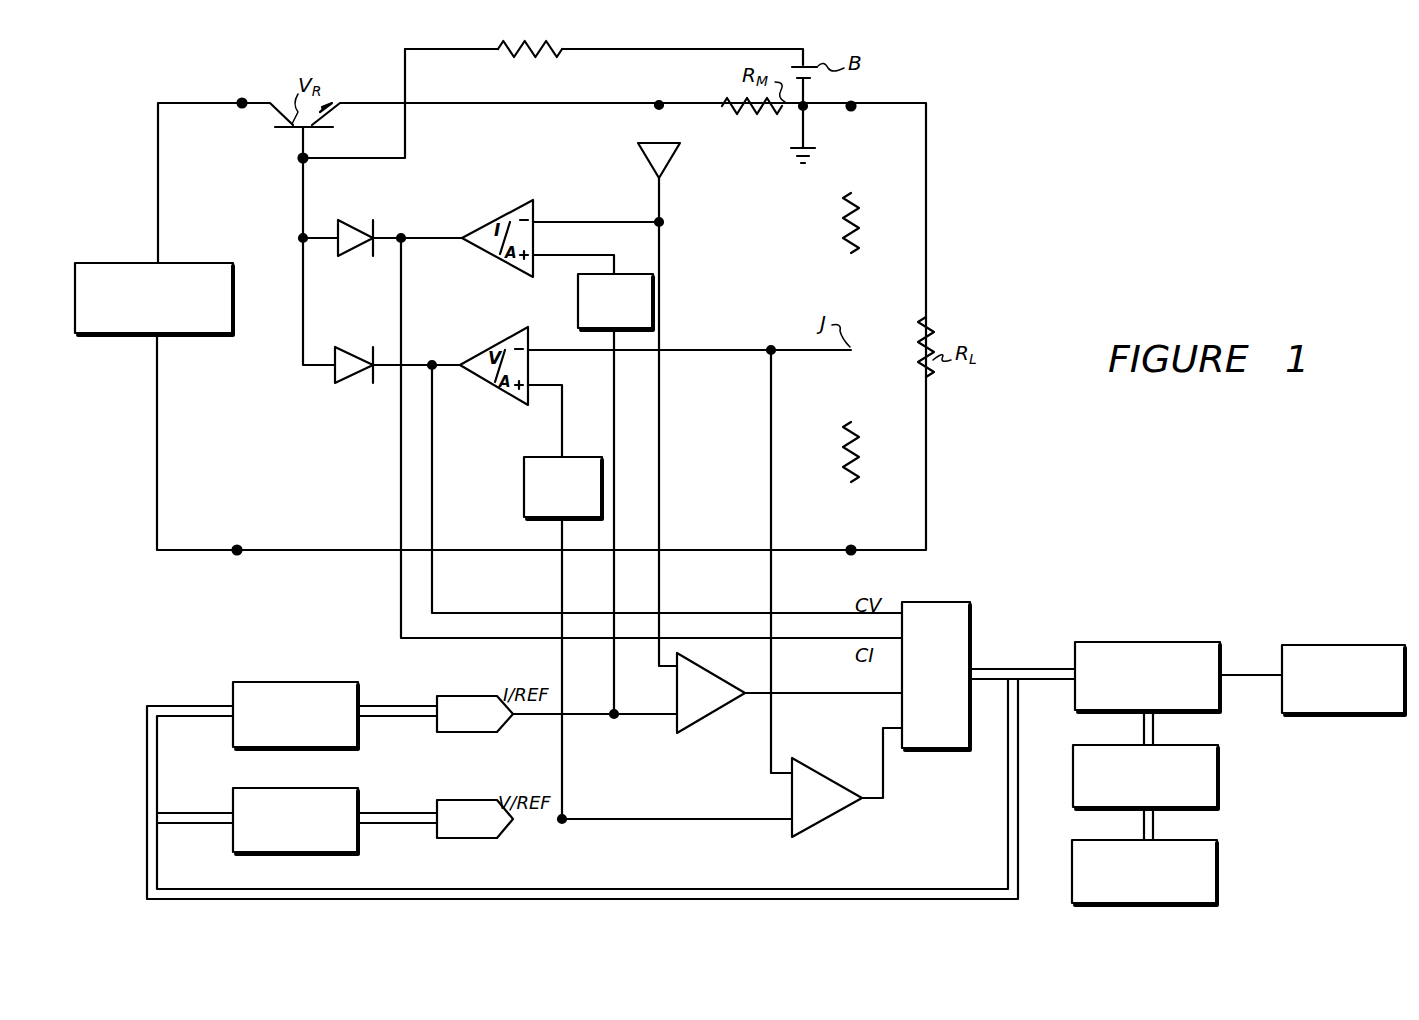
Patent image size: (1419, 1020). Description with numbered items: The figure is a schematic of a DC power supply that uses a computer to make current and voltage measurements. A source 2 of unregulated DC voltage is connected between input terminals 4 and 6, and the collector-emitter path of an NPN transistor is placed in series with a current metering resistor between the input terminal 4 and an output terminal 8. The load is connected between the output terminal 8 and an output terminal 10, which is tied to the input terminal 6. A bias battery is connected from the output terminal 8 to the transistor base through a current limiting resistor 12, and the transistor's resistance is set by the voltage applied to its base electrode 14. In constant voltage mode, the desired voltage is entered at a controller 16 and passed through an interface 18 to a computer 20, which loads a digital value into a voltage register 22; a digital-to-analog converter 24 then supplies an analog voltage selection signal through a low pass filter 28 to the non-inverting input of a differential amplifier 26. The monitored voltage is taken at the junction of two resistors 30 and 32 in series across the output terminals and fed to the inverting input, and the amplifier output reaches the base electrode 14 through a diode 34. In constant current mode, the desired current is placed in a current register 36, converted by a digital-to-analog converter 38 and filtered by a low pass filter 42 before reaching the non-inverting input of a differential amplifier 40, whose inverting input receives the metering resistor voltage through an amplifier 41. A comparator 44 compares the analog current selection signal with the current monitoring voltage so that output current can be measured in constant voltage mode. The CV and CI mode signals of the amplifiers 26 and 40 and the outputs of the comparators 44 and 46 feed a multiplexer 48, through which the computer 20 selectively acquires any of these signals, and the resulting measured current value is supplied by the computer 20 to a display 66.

The source of unregulated DC voltage 2 is at (207, 262).
The input terminal 4 is at (246, 98).
The input terminal 6 is at (240, 545).
The output terminal 8 is at (857, 104).
The output terminal 10 is at (846, 548).
The current limiting resistor 12 is at (528, 45).
The base electrode 14 is at (298, 158).
The controller 16 is at (1219, 888).
The interface 18 is at (1220, 794).
The computer 20 is at (1222, 703).
The voltage register 22 is at (320, 788).
The digital-to-analog converter 24 is at (470, 799).
The differential amplifier 26 is at (510, 326).
The low pass filter 28 is at (540, 456).
The resistor 30 is at (857, 224).
The resistor 32 is at (856, 472).
The diode 34 is at (362, 350).
The current register 36 is at (320, 682).
The digital-to-analog converter 38 is at (470, 695).
The differential amplifier 40 is at (536, 204).
The amplifier 41 is at (681, 160).
The low pass filter 42 is at (362, 222).
The comparator 44 is at (708, 730).
The comparator 46 is at (822, 772).
The multiplexer 48 is at (972, 627).
The display 66 is at (1350, 716).